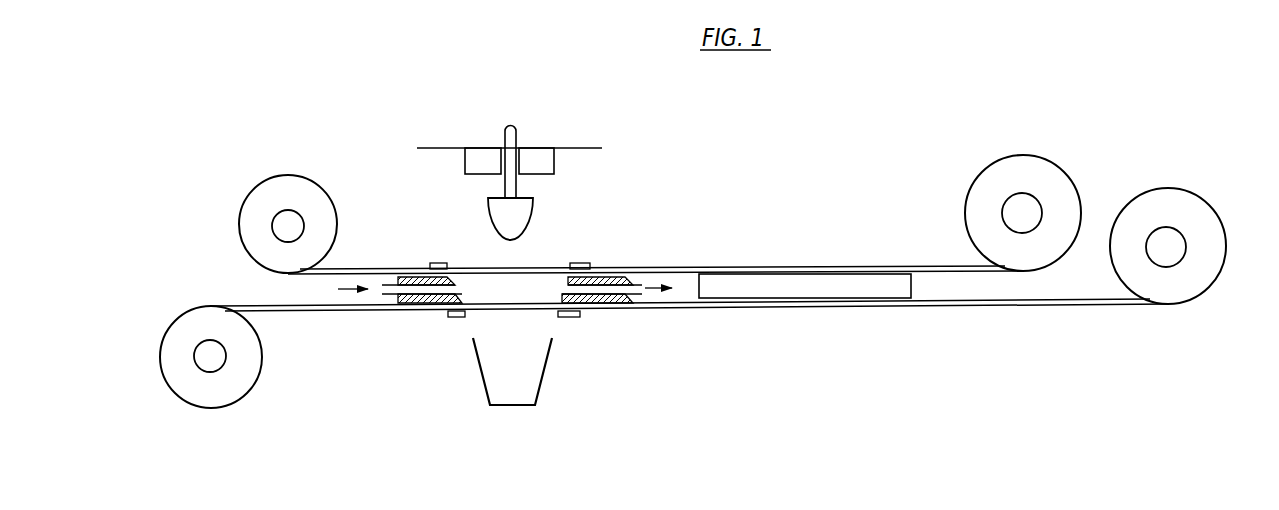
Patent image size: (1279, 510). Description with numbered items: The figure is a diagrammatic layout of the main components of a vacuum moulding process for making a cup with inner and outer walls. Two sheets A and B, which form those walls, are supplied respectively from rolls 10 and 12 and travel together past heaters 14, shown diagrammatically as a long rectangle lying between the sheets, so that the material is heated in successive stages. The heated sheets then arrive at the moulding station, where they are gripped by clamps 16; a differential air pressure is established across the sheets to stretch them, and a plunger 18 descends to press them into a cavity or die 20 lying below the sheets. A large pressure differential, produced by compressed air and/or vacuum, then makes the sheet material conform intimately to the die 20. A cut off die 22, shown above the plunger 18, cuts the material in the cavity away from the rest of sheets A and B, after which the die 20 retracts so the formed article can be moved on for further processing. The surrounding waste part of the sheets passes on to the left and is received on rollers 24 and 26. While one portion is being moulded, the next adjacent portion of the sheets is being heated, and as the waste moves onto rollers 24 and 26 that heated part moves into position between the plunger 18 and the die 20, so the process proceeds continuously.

The roll 10 is at (1040, 173).
The roll 12 is at (1212, 237).
The heaters 14 is at (878, 285).
The clamps 16 is at (593, 318).
The plunger 18 is at (476, 203).
The cavity or die 20 is at (479, 380).
The cut off die 22 is at (478, 147).
The roller 24 is at (258, 208).
The roller 26 is at (243, 377).
The sheet A is at (936, 266).
The sheet B is at (1030, 342).